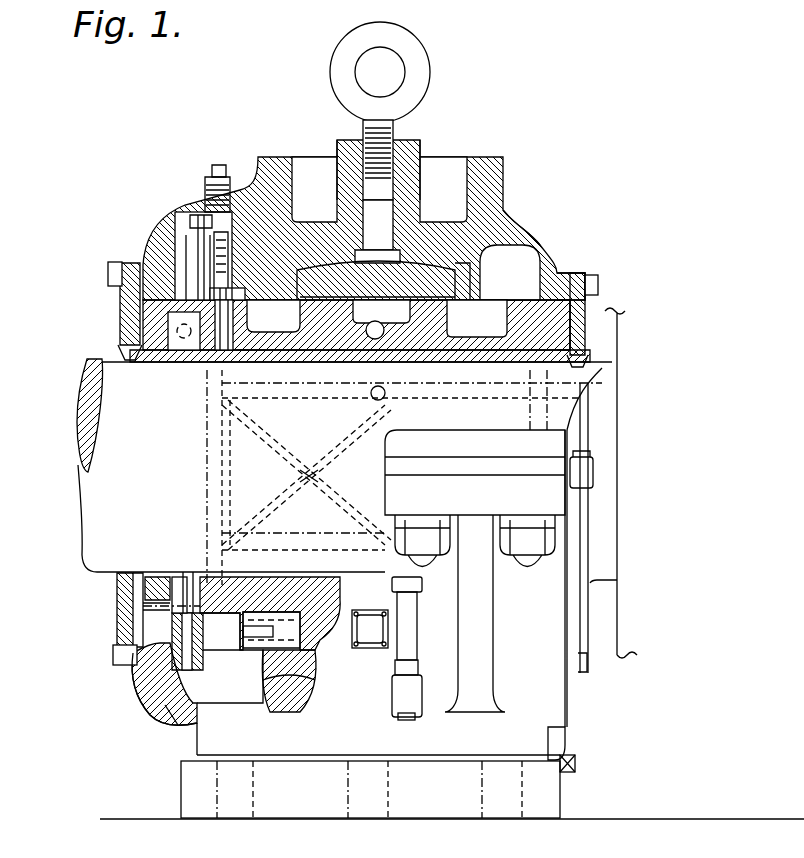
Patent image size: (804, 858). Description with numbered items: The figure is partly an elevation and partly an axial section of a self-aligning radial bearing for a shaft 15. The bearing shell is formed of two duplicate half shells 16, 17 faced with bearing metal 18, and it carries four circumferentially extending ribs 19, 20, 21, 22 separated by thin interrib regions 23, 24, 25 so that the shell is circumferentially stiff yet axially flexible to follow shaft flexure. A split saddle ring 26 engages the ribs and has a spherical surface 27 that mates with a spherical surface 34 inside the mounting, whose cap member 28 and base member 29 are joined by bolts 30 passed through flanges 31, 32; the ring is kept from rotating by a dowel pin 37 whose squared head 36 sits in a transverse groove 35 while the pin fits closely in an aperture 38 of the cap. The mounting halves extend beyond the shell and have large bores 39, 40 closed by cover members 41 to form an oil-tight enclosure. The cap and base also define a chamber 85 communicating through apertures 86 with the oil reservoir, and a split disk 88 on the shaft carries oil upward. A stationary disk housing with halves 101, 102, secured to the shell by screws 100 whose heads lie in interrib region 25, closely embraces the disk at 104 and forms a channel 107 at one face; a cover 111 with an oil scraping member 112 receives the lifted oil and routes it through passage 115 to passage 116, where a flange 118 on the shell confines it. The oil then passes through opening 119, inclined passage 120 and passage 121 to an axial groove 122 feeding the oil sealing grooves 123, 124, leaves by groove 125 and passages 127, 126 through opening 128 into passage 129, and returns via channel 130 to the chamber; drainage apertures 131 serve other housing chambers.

The shaft 15 is at (95, 535).
The half shell 16 is at (560, 321).
The half shell 17 is at (312, 610).
The bearing metal 18 is at (479, 354).
The circumferentially extending rib 19 is at (548, 299).
The circumferentially extending rib 20 is at (455, 307).
The circumferentially extending rib 21 is at (377, 283).
The circumferentially extending rib 22 is at (364, 220).
The interrib region 23 is at (477, 318).
The interrib region 24 is at (381, 318).
The interrib region 25 is at (273, 312).
The saddle ring 26 is at (490, 266).
The spherical surface 27 is at (430, 264).
The cap member 28 is at (405, 168).
The base member 29 is at (225, 737).
The bolts 30 is at (425, 563).
The flange 31 is at (548, 444).
The flange 32 is at (552, 497).
The spherical surface 34 is at (296, 258).
The transverse groove 35 is at (406, 242).
The squared head 36 is at (398, 232).
The dowel pin 37 is at (335, 214).
The aperture 38 is at (412, 203).
The bore 39 is at (578, 279).
The bore 40 is at (112, 270).
The cover members 41 is at (120, 328).
The chamber 85 is at (170, 705).
The apertures 86 is at (195, 727).
The disk 88 is at (240, 686).
The bolts or screws 100 is at (225, 295).
The disk housing half 101 is at (130, 664).
The disk housing half 102 is at (215, 655).
The inner periphery embrace 104 is at (185, 320).
The channel 107 is at (190, 270).
The cover 111 is at (232, 184).
The oil scraping member 112 is at (185, 243).
The passage 115 is at (208, 181).
The passage 116 is at (185, 226).
The axially extending flange 118 is at (241, 356).
The opening 119 is at (225, 506).
The passage 120 is at (318, 438).
The passage 121 is at (381, 400).
The axially extending groove 122 is at (292, 400).
The oil sealing groove 123 is at (600, 385).
The oil sealing groove 124 is at (207, 400).
The axially extending groove 125 is at (259, 543).
The passage 126 is at (312, 506).
The passage 127 is at (395, 545).
The opening 128 is at (220, 426).
The passage 129 is at (257, 583).
The channel 130 is at (186, 583).
The drainage apertures 131 is at (143, 605).